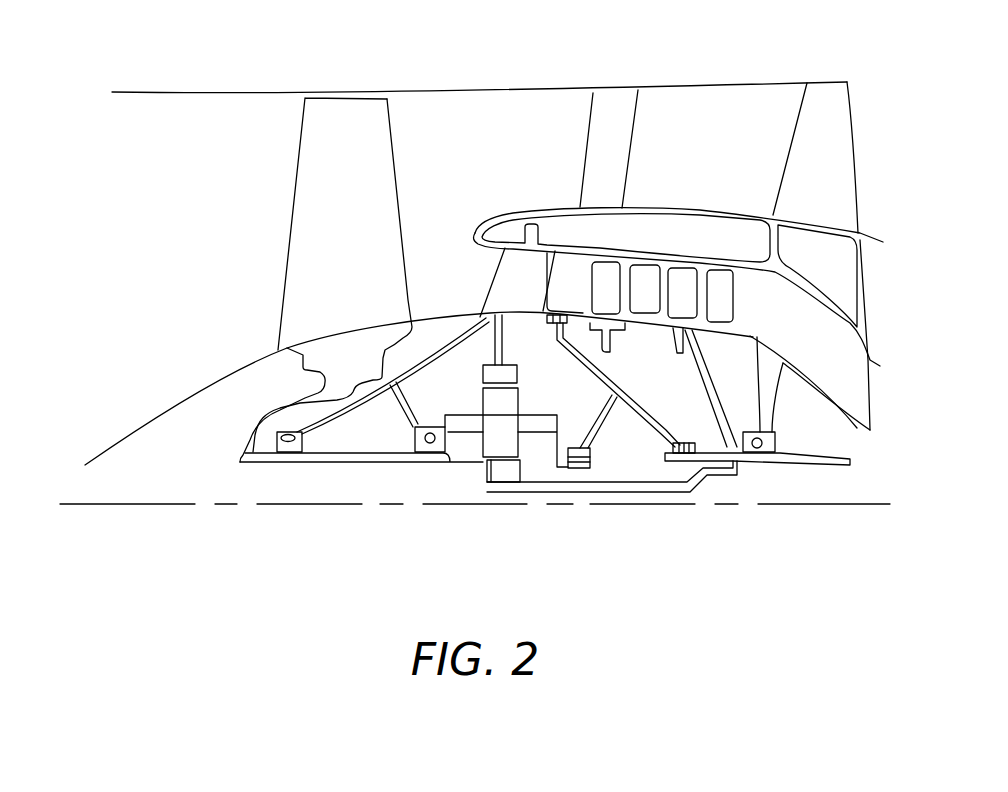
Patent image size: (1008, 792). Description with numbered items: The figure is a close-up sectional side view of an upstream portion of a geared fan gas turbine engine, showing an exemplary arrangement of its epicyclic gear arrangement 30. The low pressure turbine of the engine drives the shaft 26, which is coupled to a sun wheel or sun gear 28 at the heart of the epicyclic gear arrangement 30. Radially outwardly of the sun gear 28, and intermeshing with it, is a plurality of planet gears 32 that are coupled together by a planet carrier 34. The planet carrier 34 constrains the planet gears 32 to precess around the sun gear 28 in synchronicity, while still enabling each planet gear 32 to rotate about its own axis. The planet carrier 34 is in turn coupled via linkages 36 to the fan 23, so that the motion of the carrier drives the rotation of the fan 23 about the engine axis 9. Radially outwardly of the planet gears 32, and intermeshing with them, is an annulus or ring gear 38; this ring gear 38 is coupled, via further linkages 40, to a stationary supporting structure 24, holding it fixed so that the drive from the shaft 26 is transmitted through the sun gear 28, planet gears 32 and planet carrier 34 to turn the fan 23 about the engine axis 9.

The engine axis 9 is at (175, 506).
The fan 23 is at (320, 223).
The stationary supporting structure 24 is at (505, 275).
The shaft 26 is at (627, 485).
The sun gear 28 is at (505, 473).
The epicyclic gear arrangement 30 is at (470, 457).
The planet gears 32 is at (492, 445).
The planet carrier 34 is at (553, 443).
The linkages 36 is at (460, 450).
The ring gear 38 is at (507, 373).
The linkages 40 is at (503, 343).